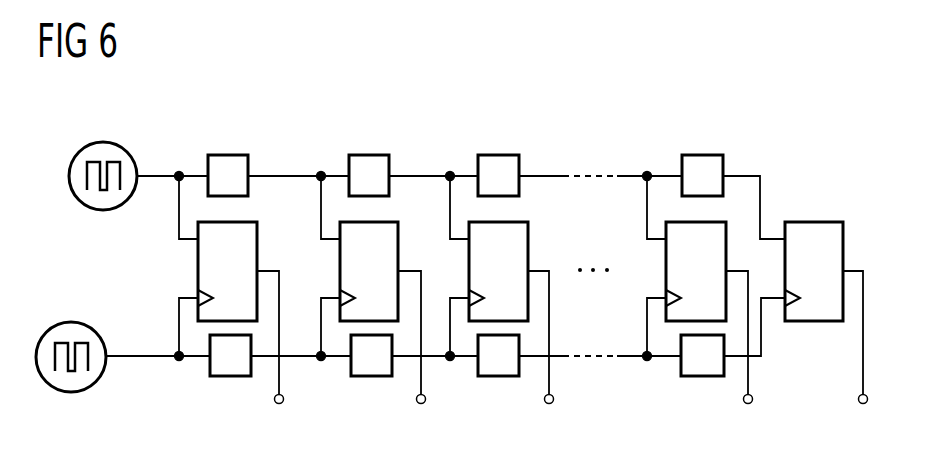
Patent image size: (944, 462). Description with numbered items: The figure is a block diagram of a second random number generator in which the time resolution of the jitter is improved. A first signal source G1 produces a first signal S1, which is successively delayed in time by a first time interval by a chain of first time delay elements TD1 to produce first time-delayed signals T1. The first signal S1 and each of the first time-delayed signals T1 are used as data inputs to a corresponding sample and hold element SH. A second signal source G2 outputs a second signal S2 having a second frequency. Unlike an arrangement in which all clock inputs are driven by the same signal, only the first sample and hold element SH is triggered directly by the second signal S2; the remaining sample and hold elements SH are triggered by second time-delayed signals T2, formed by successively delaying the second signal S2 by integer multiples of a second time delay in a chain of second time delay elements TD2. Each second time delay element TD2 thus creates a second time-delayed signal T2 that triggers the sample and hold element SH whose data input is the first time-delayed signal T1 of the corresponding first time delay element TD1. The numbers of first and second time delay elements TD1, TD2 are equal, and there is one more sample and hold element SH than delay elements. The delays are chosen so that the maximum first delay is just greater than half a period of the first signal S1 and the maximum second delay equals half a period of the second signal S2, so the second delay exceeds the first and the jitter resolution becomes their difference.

The first signal source G1 is at (103, 141).
The second signal source G2 is at (69, 322).
The first time delay element TD1 is at (227, 155).
The second time delay element TD2 is at (228, 376).
The first signal S1 is at (180, 162).
The second signal S2 is at (181, 373).
The first time-delayed signal T1 is at (530, 161).
The second time-delayed signal T2 is at (543, 373).
The sample and hold element SH is at (257, 241).